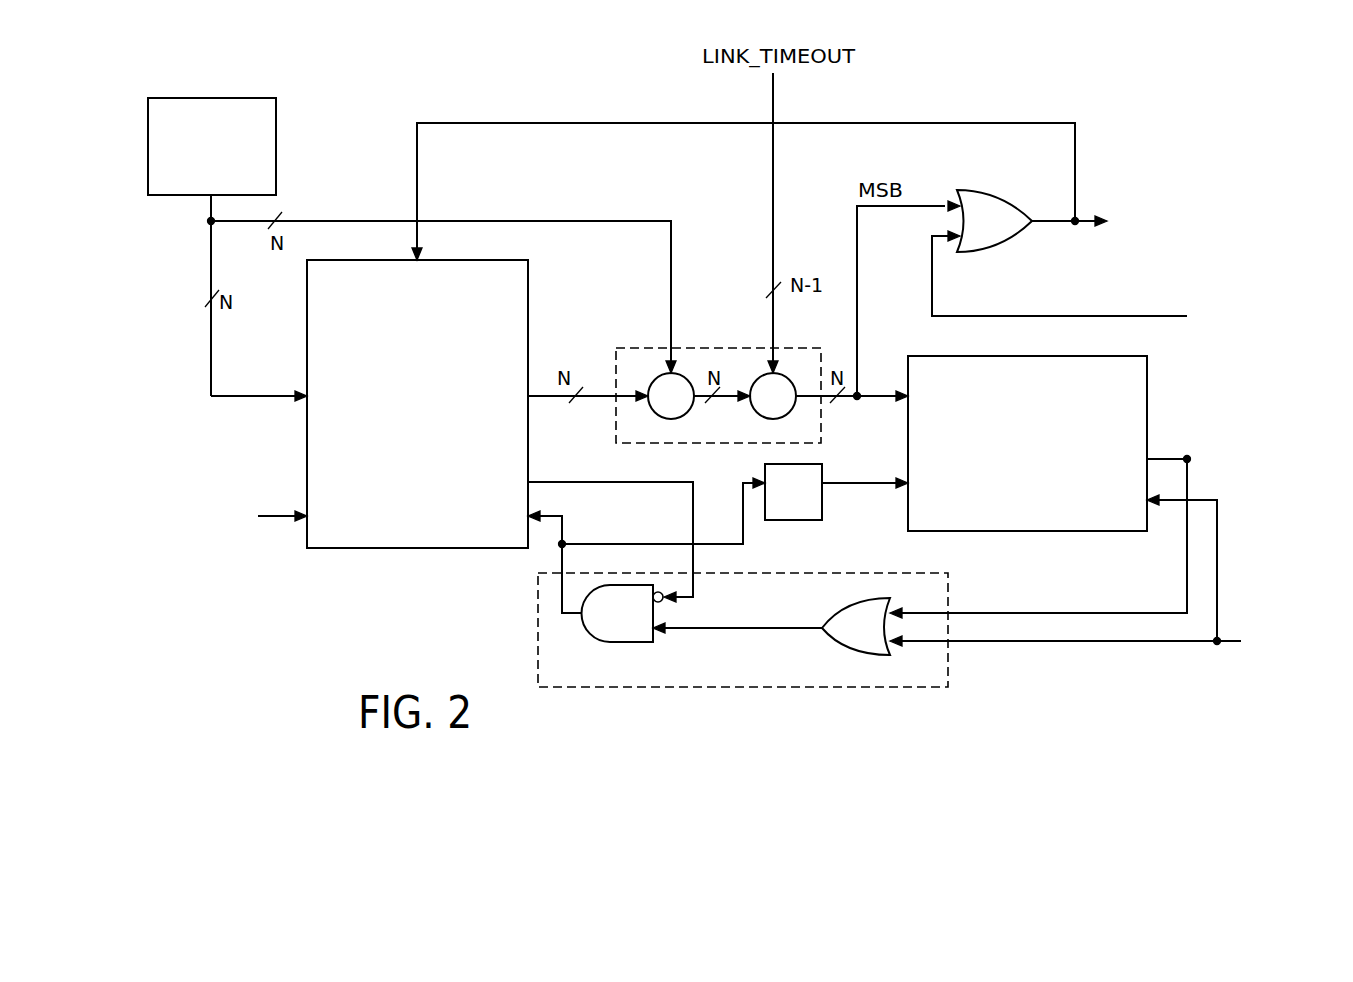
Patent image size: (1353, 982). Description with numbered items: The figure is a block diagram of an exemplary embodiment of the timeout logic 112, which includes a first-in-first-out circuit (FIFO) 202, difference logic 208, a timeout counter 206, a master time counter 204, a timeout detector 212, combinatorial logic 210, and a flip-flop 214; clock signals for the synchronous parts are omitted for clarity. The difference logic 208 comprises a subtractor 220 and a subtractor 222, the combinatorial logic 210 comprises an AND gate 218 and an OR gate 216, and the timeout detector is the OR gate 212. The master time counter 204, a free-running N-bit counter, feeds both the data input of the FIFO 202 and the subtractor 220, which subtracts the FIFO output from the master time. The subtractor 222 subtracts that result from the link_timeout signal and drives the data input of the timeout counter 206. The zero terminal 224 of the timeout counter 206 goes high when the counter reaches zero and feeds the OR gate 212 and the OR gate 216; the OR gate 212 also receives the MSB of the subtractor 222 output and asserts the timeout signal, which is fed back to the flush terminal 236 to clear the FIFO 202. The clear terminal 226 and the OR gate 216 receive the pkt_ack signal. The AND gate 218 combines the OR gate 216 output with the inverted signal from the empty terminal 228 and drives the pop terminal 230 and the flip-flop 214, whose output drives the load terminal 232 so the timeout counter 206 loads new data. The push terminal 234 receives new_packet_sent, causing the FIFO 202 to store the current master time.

The timeout logic 112 is at (477, 662).
The first-in-first-out circuit (FIFO) 202 is at (407, 548).
The master time counter 204 is at (218, 98).
The timeout counter 206 is at (1013, 531).
The difference logic 208 is at (683, 346).
The combinatorial logic 210 is at (718, 686).
The timeout detector (OR gate) 212 is at (970, 252).
The flip-flop 214 is at (805, 520).
The OR gate 216 is at (886, 655).
The AND gate 218 is at (620, 642).
The subtractor 220 is at (655, 378).
The subtractor 222 is at (757, 378).
The zero terminal 224 is at (1163, 459).
The clear terminal 226 is at (1217, 533).
The empty terminal 228 is at (545, 482).
The pop terminal 230 is at (562, 525).
The load terminal 232 is at (845, 483).
The push terminal 234 is at (272, 513).
The flush terminal 236 is at (417, 174).